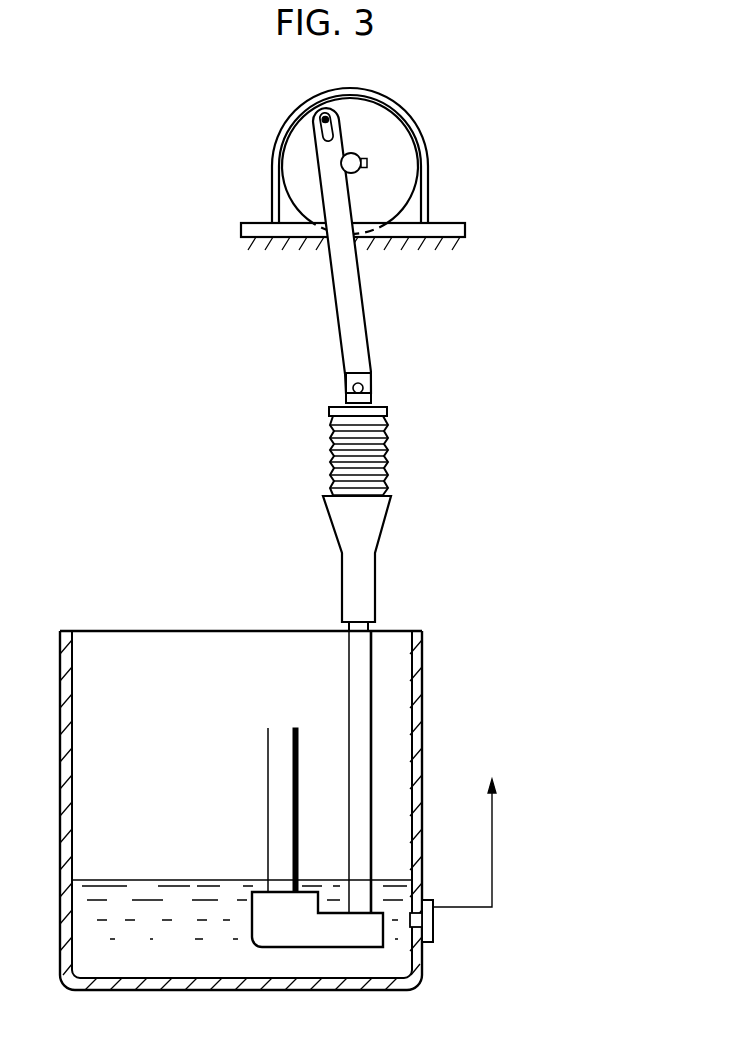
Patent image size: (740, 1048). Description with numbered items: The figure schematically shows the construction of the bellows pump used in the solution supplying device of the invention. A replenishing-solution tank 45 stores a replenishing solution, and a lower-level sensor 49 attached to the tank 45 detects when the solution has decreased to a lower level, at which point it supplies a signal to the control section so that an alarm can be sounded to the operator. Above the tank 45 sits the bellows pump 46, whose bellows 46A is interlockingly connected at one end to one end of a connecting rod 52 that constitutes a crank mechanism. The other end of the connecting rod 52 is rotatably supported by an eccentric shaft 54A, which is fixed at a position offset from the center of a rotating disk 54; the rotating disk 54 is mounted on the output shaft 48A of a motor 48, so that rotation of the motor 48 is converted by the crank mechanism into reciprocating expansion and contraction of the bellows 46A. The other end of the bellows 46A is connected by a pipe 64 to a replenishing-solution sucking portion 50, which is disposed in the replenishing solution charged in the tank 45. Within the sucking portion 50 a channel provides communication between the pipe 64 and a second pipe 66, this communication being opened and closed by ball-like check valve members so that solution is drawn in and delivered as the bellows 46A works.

The replenishing-solution tank 45 is at (355, 991).
The bellows pump 46 is at (384, 518).
The bellows 46A is at (333, 480).
The motor 48 is at (427, 150).
The output shaft 48A is at (352, 174).
The lower-level sensor 49 is at (434, 930).
The replenishing-solution sucking portion 50 is at (272, 940).
The connecting rod 52 is at (370, 350).
The rotating disk 54 is at (377, 125).
The eccentric shaft 54A is at (316, 110).
The pipe 64 is at (358, 795).
The pipe 66 is at (268, 783).